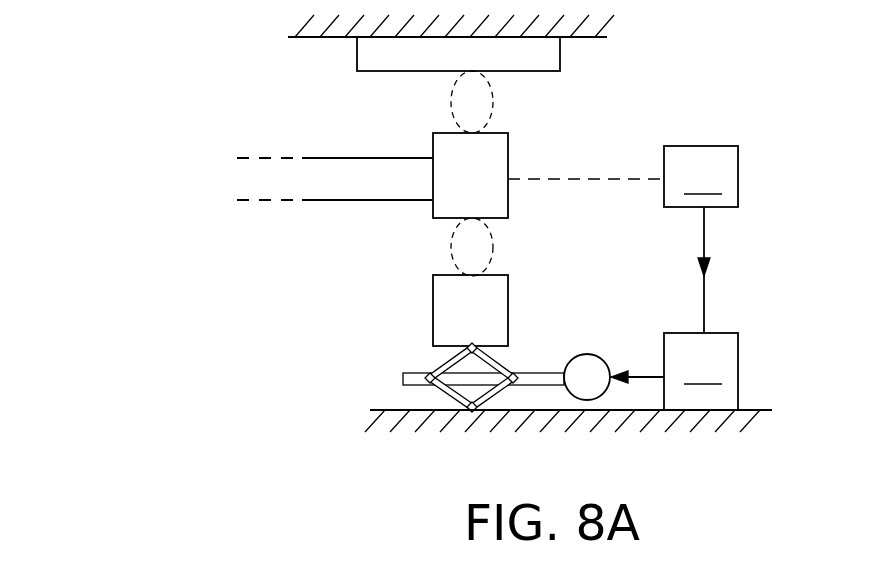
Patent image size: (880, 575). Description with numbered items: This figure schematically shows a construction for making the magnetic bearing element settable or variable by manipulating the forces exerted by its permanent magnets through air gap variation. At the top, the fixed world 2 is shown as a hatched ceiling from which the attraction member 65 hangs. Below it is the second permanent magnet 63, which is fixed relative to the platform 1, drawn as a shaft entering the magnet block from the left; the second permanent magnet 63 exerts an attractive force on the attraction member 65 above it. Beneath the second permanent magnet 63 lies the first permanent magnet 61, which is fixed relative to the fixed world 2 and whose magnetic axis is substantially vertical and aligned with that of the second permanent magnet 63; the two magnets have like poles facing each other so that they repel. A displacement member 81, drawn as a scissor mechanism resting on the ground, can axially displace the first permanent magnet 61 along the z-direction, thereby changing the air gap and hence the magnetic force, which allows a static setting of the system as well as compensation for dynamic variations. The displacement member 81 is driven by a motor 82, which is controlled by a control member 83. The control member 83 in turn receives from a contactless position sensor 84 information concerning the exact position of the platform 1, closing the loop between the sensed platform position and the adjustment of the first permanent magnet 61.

The platform 1 is at (308, 201).
The fixed world 2 is at (302, 38).
The first permanent magnet 61 is at (433, 278).
The second permanent magnet 63 is at (508, 138).
The attraction member 65 is at (374, 71).
The displacement member 81 is at (448, 360).
The motor 82 is at (585, 354).
The control member 83 is at (701, 371).
The contactless position sensor 84 is at (701, 176).